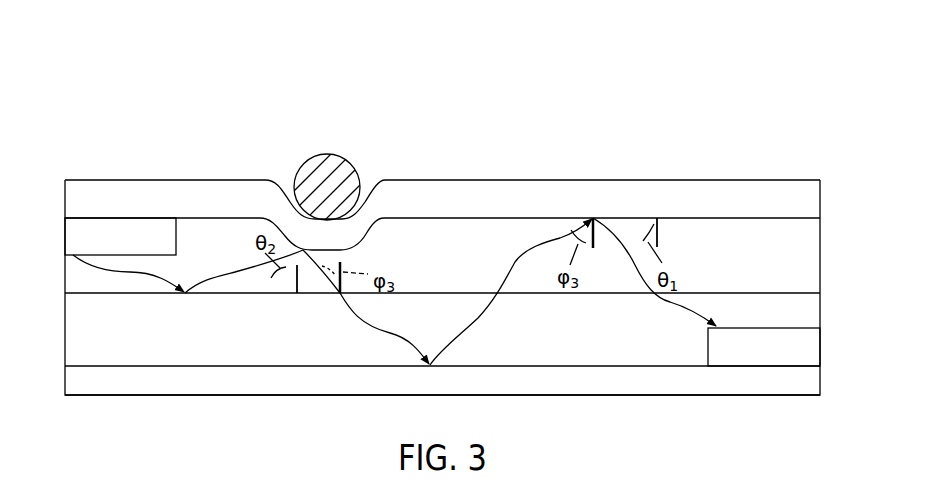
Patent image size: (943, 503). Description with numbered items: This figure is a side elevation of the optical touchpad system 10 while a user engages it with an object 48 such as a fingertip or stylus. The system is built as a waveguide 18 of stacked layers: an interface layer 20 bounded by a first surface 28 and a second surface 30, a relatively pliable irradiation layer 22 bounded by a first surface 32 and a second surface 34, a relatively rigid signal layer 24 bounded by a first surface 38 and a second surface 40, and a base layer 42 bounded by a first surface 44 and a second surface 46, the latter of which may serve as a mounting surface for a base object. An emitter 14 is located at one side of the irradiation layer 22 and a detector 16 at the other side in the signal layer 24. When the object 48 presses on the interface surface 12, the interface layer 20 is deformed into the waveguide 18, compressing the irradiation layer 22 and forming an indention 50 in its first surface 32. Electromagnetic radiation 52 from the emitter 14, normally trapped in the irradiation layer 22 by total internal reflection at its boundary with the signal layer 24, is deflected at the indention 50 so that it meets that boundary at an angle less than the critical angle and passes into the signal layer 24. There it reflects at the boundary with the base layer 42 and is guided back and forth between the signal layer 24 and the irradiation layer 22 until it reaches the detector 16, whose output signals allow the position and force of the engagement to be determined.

The optical touchpad system 10 is at (247, 77).
The interface surface 12 is at (511, 179).
The emitter 14 is at (108, 217).
The detector 16 is at (765, 367).
The waveguide 18 is at (764, 161).
The interface layer 20 is at (159, 196).
The irradiation layer 22 is at (777, 271).
The signal layer 24 is at (529, 336).
The first surface 28 is at (675, 180).
The second surface 30 is at (488, 216).
The first surface 32 is at (742, 219).
The second surface 34 is at (427, 292).
The first surface 38 is at (570, 295).
The second surface 40 is at (630, 365).
The base layer 42 is at (260, 380).
The first surface 44 is at (655, 367).
The second surface 46 is at (603, 397).
The object 48 is at (340, 156).
The indention 50 is at (365, 237).
The electromagnetic radiation 52 is at (355, 323).